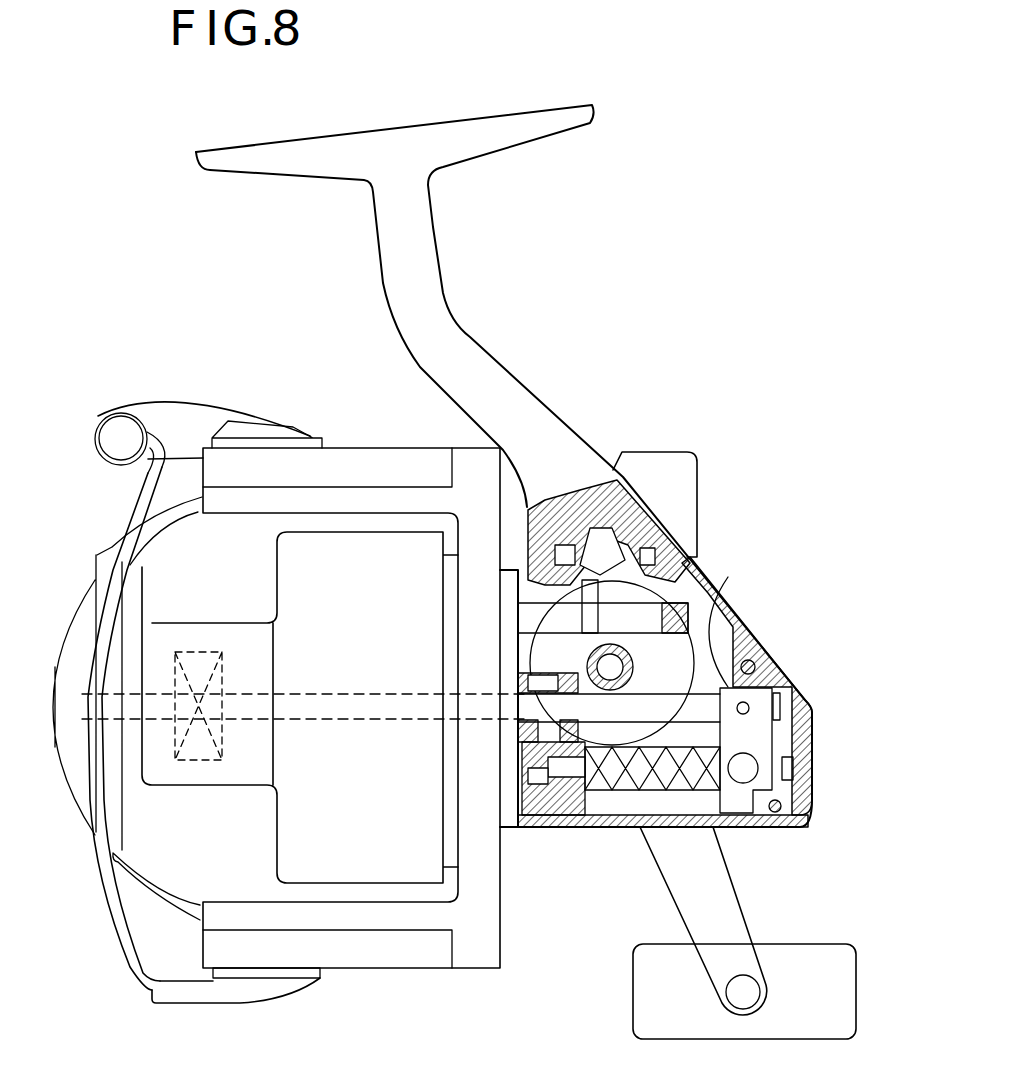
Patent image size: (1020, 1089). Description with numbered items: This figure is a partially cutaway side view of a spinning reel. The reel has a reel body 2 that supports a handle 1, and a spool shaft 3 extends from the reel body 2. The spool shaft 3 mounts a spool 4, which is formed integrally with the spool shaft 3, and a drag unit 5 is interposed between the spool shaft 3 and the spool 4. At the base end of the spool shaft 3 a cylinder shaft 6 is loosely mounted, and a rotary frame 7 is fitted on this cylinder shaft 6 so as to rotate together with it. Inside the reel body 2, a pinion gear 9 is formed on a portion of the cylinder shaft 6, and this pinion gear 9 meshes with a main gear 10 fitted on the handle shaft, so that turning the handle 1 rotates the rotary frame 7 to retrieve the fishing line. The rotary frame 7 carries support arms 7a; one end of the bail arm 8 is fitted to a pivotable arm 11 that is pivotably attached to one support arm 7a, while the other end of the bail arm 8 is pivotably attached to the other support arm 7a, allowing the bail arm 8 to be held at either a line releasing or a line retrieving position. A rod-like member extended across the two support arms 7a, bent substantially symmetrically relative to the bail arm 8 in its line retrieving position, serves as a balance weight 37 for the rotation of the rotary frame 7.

The handle 1 is at (740, 897).
The reel body 2 is at (695, 633).
The spool shaft 3 is at (735, 688).
The spool 4 is at (218, 623).
The drag unit 5 is at (187, 650).
The cylinder shaft 6 is at (540, 692).
The rotary frame 7 is at (480, 970).
The support arm 7a is at (332, 447).
The bail arm 8 is at (130, 512).
The pinion gear 9 is at (540, 640).
The main gear 10 is at (707, 630).
The pivotable arm 11 is at (173, 405).
The balance weight 37 is at (173, 883).